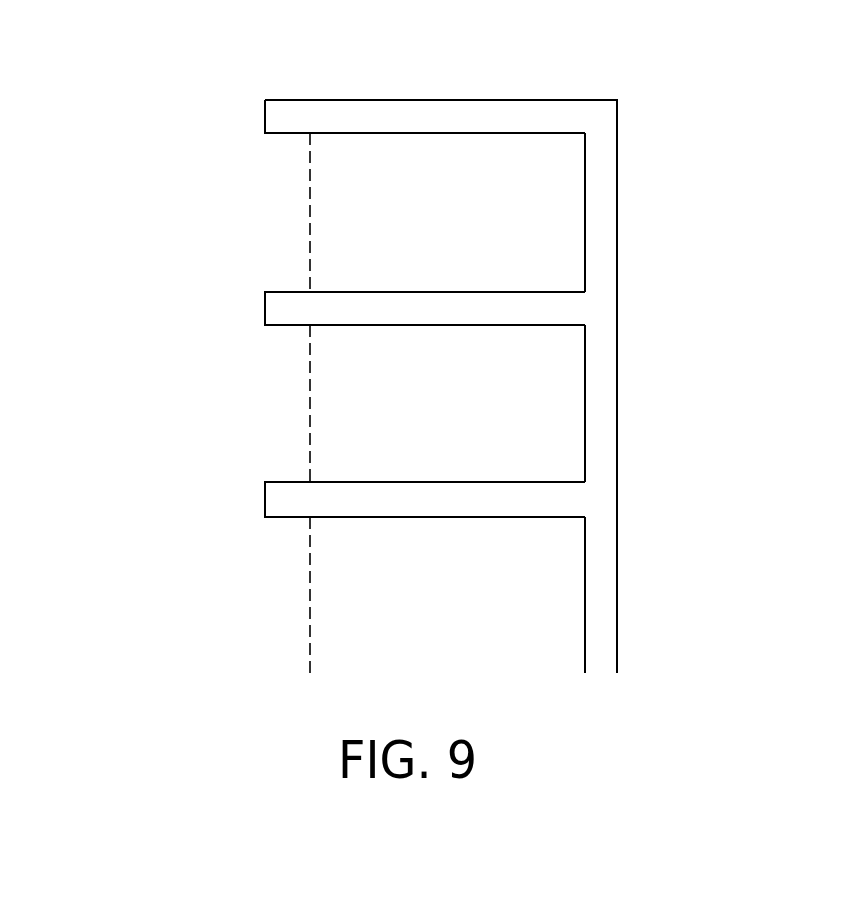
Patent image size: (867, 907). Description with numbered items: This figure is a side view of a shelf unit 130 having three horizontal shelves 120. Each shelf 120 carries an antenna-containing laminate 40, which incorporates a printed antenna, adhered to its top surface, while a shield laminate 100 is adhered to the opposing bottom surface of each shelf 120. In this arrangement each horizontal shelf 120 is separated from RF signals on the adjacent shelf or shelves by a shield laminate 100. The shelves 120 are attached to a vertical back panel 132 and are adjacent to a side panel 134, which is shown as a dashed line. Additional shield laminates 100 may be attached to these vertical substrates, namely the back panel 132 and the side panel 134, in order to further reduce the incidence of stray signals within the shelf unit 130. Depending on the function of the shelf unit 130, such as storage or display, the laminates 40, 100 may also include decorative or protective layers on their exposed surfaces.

The laminate 40 is at (373, 100).
The shield laminate 100 is at (412, 133).
The shelf 120 is at (265, 118).
The shelf unit 130 is at (167, 127).
The back panel 132 is at (610, 280).
The side panel 134 is at (313, 232).